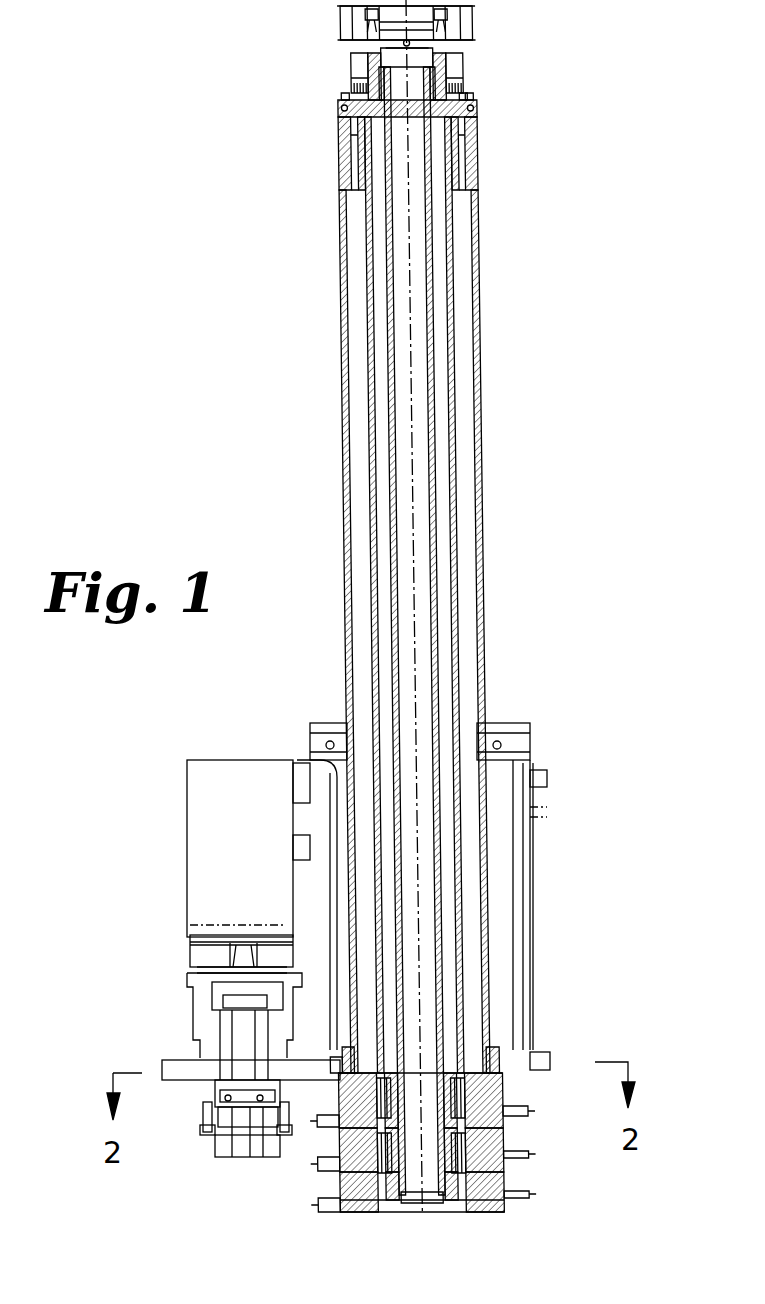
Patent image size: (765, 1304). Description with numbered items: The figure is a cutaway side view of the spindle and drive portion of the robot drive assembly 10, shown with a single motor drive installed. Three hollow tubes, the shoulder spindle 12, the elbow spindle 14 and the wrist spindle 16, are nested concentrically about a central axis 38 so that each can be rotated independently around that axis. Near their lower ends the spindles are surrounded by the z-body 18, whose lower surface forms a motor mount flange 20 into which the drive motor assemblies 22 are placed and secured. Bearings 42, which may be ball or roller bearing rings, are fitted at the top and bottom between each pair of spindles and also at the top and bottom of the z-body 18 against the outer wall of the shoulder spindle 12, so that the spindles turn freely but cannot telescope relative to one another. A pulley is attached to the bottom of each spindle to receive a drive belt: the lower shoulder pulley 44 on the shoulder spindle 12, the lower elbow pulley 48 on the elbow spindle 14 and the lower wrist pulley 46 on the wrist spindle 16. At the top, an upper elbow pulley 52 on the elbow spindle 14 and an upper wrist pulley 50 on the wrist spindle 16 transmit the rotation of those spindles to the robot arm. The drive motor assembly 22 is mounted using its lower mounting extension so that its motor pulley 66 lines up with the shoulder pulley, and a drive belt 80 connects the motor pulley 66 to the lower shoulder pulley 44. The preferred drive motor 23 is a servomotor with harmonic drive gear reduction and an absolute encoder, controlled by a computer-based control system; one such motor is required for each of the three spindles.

The robot drive assembly 10 is at (500, 459).
The shoulder spindle 12 is at (336, 530).
The elbow spindle 14 is at (384, 458).
The wrist spindle 16 is at (366, 388).
The z-body 18 is at (533, 892).
The motor mount flange 20 is at (166, 1082).
The drive motor assembly 22 is at (180, 892).
The drive motor 23 is at (197, 781).
The central axis 38 is at (412, 205).
The bearings 42 is at (462, 97).
The lower shoulder pulley 44 is at (490, 1088).
The lower wrist pulley 46 is at (490, 1140).
The lower elbow pulley 48 is at (490, 1181).
The upper wrist pulley 50 is at (352, 69).
The upper elbow pulley 52 is at (340, 16).
The motor pulley 66 is at (205, 1115).
The drive belt 80 is at (313, 1102).